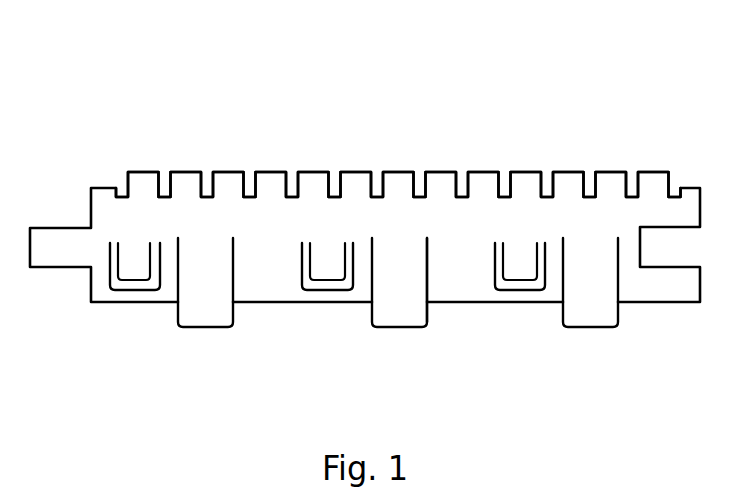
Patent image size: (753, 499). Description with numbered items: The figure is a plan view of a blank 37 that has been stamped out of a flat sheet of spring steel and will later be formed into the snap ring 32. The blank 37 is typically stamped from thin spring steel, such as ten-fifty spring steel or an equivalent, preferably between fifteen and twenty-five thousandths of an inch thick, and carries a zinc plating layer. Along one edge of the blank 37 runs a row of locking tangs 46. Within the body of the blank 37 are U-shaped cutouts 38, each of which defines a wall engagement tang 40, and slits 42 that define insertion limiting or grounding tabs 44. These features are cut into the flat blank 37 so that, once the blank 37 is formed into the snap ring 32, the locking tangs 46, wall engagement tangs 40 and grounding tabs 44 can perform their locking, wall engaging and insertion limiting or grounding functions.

The blank 37 is at (410, 139).
The locking tangs 46 is at (229, 186).
The insertion limiting or grounding tabs 44 is at (219, 304).
The slits 42 is at (427, 268).
The U-shaped cutouts 38 is at (155, 268).
The wall engagement tangs 40 is at (147, 276).
The snap ring 32 is at (618, 498).